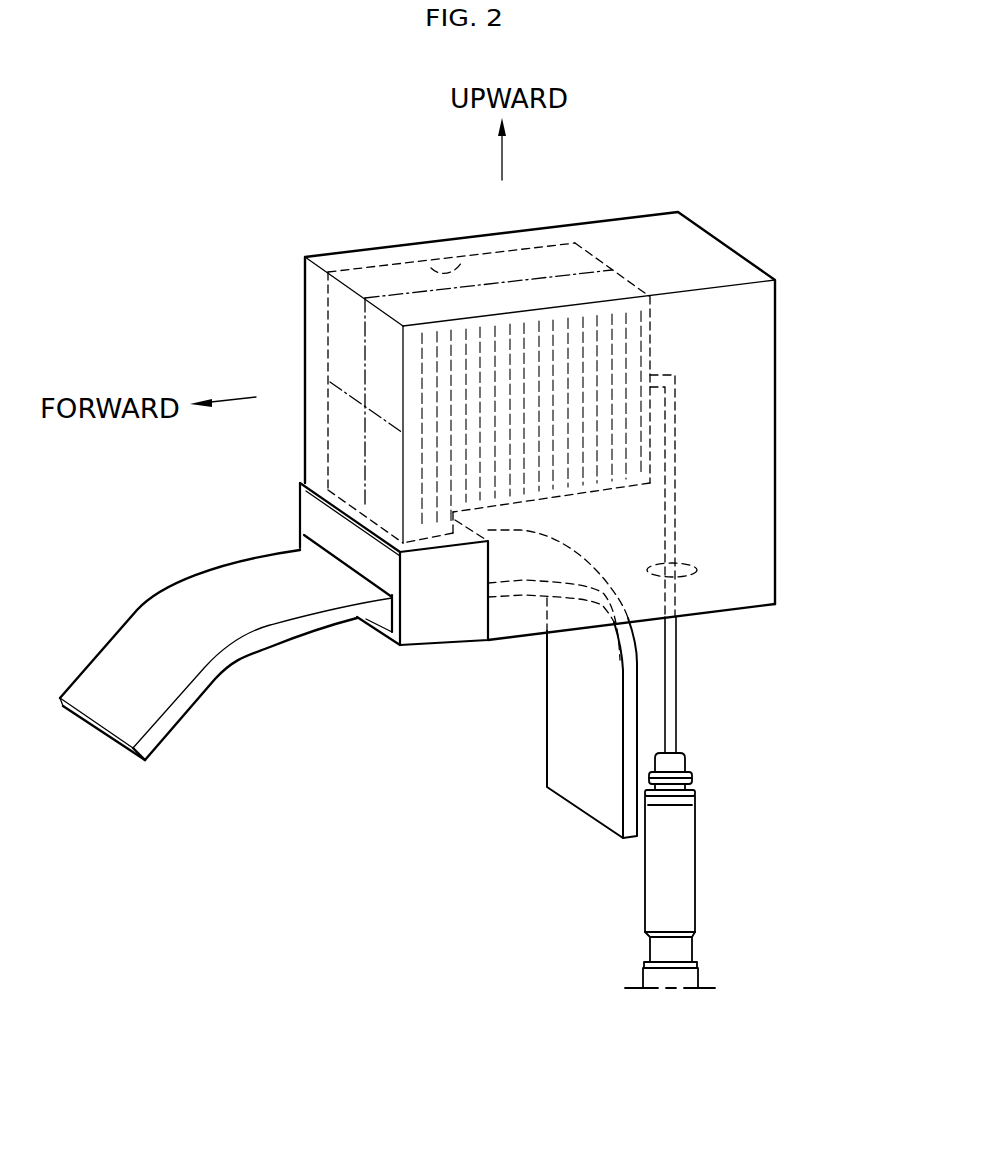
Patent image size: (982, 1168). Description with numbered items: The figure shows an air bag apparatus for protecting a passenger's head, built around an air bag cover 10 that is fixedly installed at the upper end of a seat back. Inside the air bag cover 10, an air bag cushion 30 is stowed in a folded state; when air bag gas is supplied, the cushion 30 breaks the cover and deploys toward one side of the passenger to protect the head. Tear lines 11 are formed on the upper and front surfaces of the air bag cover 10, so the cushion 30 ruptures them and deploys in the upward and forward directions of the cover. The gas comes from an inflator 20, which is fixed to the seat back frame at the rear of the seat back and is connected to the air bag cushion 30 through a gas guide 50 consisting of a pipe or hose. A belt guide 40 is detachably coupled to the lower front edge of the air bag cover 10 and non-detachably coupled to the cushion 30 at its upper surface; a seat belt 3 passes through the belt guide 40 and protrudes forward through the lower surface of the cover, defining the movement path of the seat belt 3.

The seat belt 3 is at (138, 630).
The air bag cover 10 is at (765, 461).
The tear line 11 is at (422, 293).
The inflator 20 is at (680, 870).
The air bag cushion 30 is at (650, 347).
The belt guide 40 is at (308, 520).
The gas guide 50 is at (682, 690).